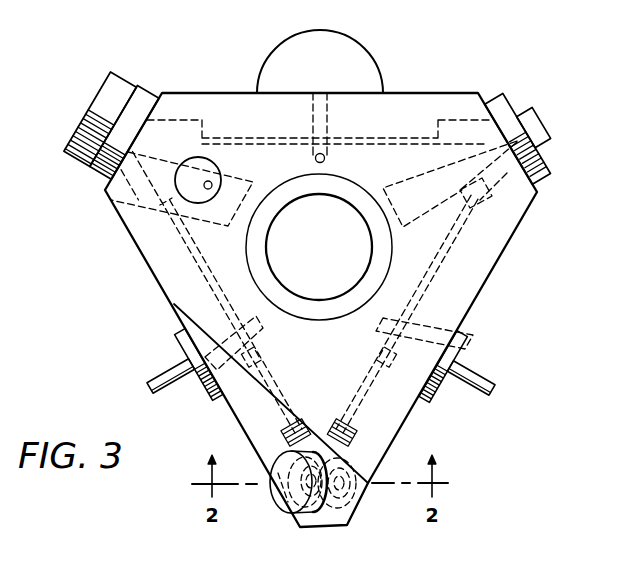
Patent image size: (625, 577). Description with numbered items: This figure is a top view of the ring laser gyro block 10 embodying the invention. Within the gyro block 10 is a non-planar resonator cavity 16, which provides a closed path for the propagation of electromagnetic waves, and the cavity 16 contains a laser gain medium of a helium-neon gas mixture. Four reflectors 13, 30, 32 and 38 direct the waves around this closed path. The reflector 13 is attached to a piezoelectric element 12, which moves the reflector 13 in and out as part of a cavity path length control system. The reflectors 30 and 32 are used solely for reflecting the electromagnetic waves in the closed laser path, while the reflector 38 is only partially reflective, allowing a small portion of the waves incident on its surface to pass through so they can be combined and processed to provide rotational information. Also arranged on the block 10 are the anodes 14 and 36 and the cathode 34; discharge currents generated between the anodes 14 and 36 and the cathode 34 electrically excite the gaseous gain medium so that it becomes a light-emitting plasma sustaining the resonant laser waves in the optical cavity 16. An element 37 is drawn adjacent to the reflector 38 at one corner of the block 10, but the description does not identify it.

The ring laser gyro block 10 is at (433, 85).
The piezoelectric element 12 is at (116, 86).
The reflector 13 is at (142, 98).
The anode 14 is at (160, 378).
The non-planar resonator cavity 16 is at (352, 140).
The reflector 30 is at (282, 514).
The reflector 32 is at (362, 500).
The cathode 34 is at (364, 52).
The anode 36 is at (483, 383).
The knob 37 is at (534, 121).
The reflector 38 is at (537, 178).